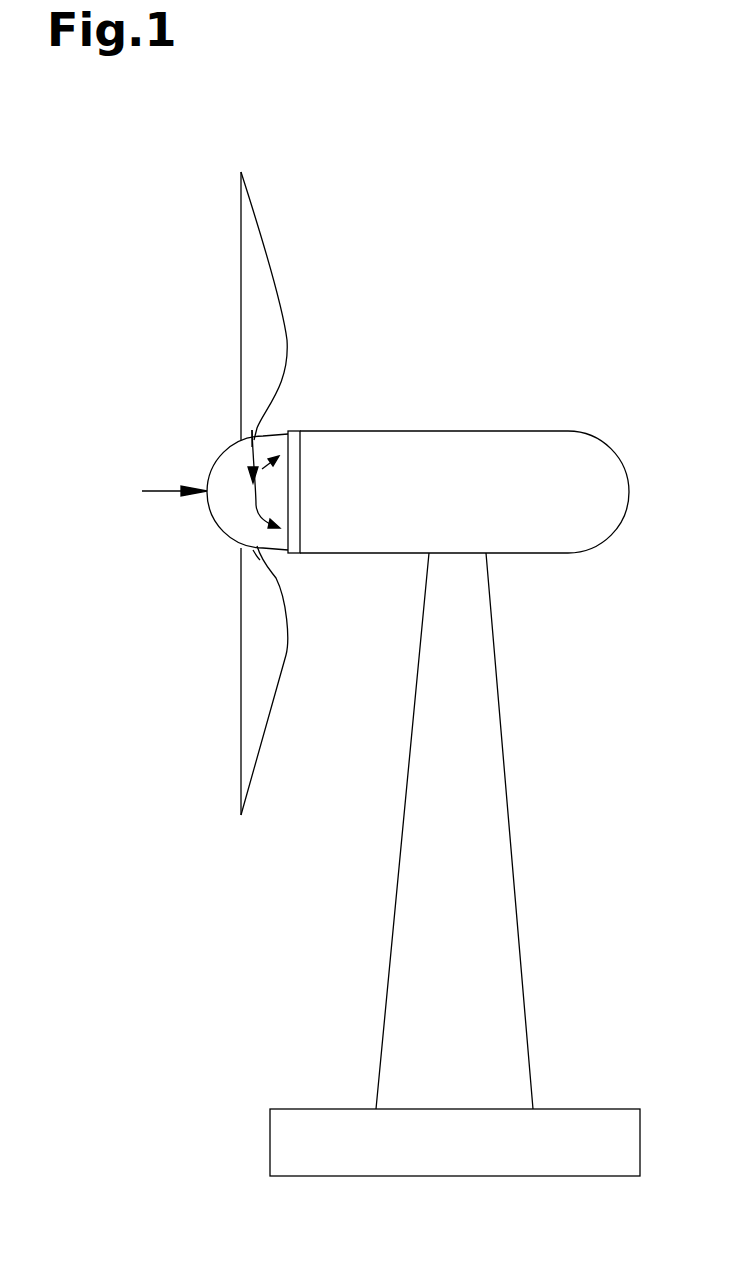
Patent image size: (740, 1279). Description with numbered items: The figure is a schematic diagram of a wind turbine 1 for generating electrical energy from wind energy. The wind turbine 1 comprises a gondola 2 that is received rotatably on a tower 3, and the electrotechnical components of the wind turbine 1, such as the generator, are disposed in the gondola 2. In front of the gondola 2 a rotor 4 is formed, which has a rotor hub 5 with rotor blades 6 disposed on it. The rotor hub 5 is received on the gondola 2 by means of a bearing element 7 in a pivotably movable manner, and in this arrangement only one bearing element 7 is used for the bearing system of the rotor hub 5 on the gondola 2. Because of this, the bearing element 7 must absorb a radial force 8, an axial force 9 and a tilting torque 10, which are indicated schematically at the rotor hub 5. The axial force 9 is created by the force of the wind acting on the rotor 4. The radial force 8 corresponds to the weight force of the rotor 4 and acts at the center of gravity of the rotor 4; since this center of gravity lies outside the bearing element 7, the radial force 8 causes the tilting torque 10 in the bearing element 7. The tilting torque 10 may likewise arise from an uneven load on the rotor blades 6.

The wind turbine 1 is at (545, 207).
The gondola 2 is at (527, 450).
The tower 3 is at (482, 787).
The rotor 4 is at (205, 455).
The rotor hub 5 is at (246, 540).
The rotor blades 6 is at (265, 322).
The bearing element 7 is at (299, 430).
The radial force 8 is at (243, 448).
The axial force 9 is at (163, 490).
The tilting torque 10 is at (262, 511).